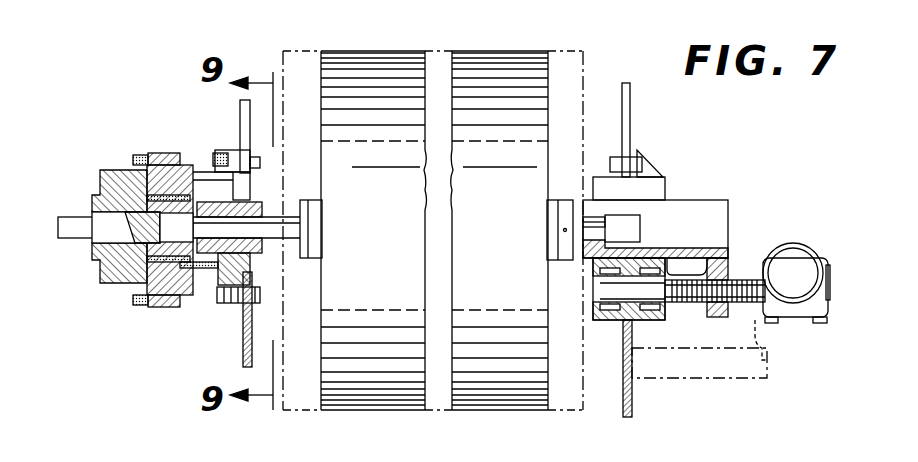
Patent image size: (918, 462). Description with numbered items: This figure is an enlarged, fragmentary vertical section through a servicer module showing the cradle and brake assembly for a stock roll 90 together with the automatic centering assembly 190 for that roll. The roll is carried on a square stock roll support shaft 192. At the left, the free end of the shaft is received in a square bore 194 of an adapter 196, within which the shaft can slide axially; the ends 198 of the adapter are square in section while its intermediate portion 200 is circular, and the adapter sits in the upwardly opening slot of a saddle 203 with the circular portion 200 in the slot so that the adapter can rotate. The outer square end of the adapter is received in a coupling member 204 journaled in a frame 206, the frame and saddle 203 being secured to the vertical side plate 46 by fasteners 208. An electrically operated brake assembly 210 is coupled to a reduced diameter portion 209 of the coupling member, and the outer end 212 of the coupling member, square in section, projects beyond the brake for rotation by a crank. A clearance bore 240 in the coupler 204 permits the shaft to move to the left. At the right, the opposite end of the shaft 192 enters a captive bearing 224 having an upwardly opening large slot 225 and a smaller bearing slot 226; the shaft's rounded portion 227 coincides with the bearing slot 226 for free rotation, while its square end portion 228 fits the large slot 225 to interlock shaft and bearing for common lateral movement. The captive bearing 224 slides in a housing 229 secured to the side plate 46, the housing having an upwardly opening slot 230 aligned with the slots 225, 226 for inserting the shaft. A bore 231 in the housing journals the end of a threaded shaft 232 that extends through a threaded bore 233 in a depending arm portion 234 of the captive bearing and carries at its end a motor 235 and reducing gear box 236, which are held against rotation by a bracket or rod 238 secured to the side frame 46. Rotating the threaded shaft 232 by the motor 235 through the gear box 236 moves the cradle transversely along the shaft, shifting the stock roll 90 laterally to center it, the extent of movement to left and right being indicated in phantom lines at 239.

The side plate 46 is at (628, 84).
The stock roll 90 is at (321, 255).
The automatic centering assembly 190 is at (690, 196).
The stock roll support shaft 192 is at (303, 200).
The square bore 194 is at (265, 252).
The adapter 196 is at (205, 262).
The adapter ends 198 is at (262, 200).
The intermediate portion 200 is at (256, 255).
The saddle 203 is at (241, 125).
The coupling member 204 is at (132, 246).
The frame 206 is at (165, 153).
The fasteners 208 is at (215, 160).
The reduced diameter portion 209 is at (100, 258).
The brake assembly 210 is at (122, 170).
The outer end 212 is at (70, 216).
The captive bearing 224 is at (730, 205).
The large slot 225 is at (728, 218).
The bearing slot 226 is at (605, 217).
The rounded portion 227 is at (560, 200).
The square end portion 228 is at (627, 237).
The housing 229 is at (592, 215).
The housing slot 230 is at (650, 185).
The bore 231 is at (615, 321).
The threaded shaft 232 is at (688, 303).
The threaded bore 233 is at (709, 318).
The depending arm portion 234 is at (733, 319).
The motor 235 is at (806, 248).
The reducing gear box 236 is at (818, 318).
The bracket or rod 238 is at (692, 381).
The phantom lines 239 is at (283, 51).
The clearance bore 240 is at (176, 227).